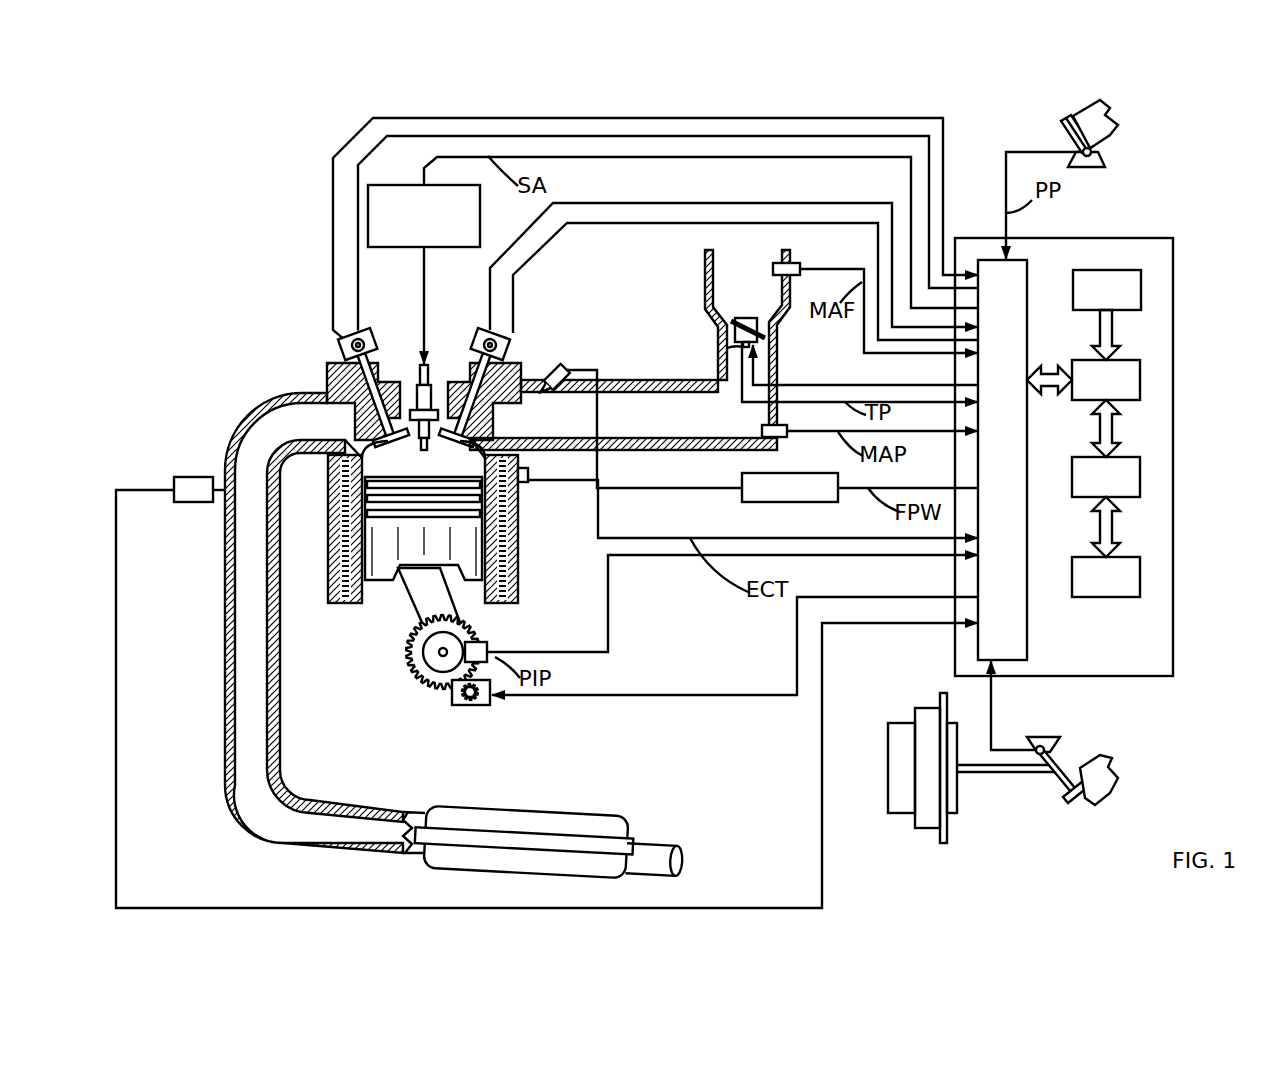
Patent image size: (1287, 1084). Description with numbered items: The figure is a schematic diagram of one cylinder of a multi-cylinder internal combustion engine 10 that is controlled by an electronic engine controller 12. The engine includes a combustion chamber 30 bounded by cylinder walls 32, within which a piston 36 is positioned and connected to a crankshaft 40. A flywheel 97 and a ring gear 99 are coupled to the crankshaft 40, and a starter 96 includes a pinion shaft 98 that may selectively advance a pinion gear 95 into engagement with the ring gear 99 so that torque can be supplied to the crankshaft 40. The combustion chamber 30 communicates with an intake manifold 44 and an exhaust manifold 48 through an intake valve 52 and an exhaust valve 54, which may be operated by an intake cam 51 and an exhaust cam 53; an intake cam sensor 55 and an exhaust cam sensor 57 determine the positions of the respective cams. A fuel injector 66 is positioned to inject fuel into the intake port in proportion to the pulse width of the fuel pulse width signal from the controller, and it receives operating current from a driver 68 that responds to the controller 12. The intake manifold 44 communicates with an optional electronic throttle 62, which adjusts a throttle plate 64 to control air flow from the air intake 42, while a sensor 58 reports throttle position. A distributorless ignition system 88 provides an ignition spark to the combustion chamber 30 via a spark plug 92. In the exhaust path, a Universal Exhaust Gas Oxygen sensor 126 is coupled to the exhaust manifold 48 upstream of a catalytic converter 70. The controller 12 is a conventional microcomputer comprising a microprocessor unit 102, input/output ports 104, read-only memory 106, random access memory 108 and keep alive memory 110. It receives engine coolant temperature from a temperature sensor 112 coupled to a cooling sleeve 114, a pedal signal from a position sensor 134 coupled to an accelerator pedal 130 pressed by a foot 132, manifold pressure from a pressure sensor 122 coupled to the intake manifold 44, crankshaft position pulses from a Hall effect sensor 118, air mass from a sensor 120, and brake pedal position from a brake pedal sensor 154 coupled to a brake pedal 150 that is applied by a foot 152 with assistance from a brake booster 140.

The internal combustion engine 10 is at (262, 320).
The electronic engine controller 12 is at (1107, 440).
The combustion chamber 30 is at (338, 560).
The cylinder walls 32 is at (365, 590).
The piston 36 is at (405, 552).
The crankshaft 40 is at (432, 683).
The air intake 42 is at (747, 343).
The intake manifold 44 is at (623, 415).
The exhaust manifold 48 is at (325, 623).
The intake cam 51 is at (480, 330).
The intake valve 52 is at (470, 425).
The exhaust cam 53 is at (365, 330).
The exhaust valve 54 is at (334, 390).
The intake cam sensor 55 is at (498, 348).
The exhaust cam sensor 57 is at (345, 343).
The throttle position sensor 58 is at (725, 345).
The electronic throttle 62 is at (770, 332).
The throttle plate 64 is at (720, 325).
The fuel injector 66 is at (560, 378).
The driver 68 is at (765, 502).
The catalytic converter 70 is at (438, 805).
The distributorless ignition system 88 is at (384, 185).
The spark plug 92 is at (430, 375).
The pinion gear 95 is at (478, 708).
The starter 96 is at (490, 706).
The flywheel 97 is at (418, 650).
The pinion shaft 98 is at (462, 708).
The ring gear 99 is at (440, 700).
The microprocessor unit 102 is at (1140, 370).
The input/output ports 104 is at (1028, 268).
The read-only memory 106 is at (1141, 285).
The random access memory 108 is at (1141, 470).
The keep alive memory 110 is at (1141, 570).
The temperature sensor 112 is at (527, 485).
The cooling sleeve 114 is at (505, 558).
The Hall effect sensor 118 is at (490, 645).
The air mass sensor 120 is at (790, 263).
The pressure sensor 122 is at (783, 440).
The Universal Exhaust Gas Oxygen sensor 126 is at (174, 480).
The accelerator pedal 130 is at (1070, 128).
The foot 132 is at (1112, 113).
The position sensor 134 is at (1100, 152).
The brake booster 140 is at (888, 813).
The brake pedal 150 is at (1062, 795).
The foot 152 is at (1098, 760).
The brake pedal sensor 154 is at (1033, 745).